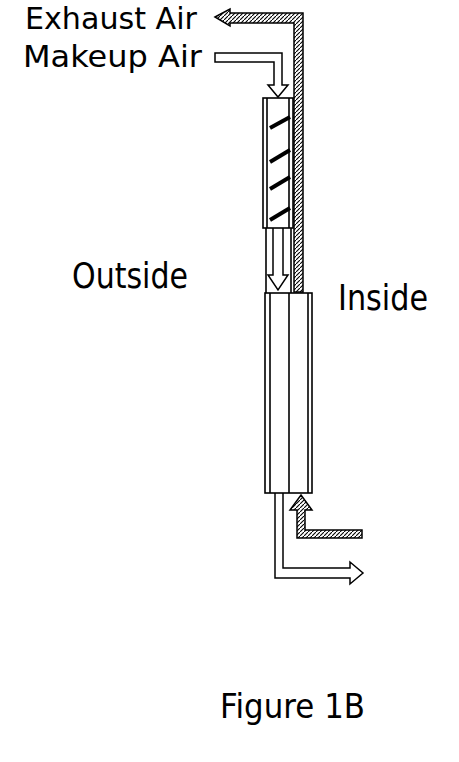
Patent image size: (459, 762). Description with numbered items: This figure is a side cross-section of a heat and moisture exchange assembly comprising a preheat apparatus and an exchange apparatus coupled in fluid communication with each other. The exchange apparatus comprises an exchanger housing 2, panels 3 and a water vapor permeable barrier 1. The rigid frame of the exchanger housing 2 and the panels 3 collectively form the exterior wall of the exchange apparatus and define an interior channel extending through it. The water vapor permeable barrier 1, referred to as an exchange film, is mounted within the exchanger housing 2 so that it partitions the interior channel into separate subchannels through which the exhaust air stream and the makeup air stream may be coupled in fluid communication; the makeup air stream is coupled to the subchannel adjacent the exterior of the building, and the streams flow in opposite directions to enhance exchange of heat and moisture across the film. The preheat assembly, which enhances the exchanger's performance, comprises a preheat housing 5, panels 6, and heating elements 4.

The water vapor permeable barrier 1 is at (289, 427).
The exchanger housing 2 is at (265, 389).
The panels 3 is at (306, 372).
The heating element 4 is at (275, 182).
The preheat housing 5 is at (263, 147).
The panels 6 is at (263, 108).